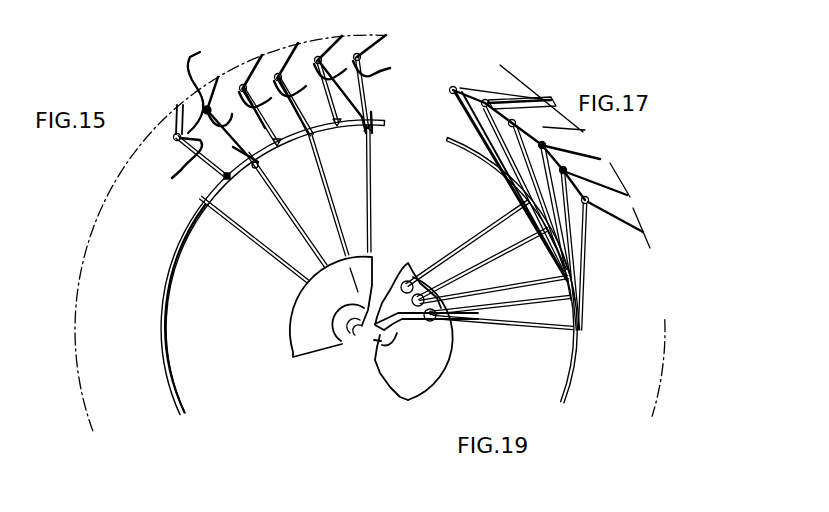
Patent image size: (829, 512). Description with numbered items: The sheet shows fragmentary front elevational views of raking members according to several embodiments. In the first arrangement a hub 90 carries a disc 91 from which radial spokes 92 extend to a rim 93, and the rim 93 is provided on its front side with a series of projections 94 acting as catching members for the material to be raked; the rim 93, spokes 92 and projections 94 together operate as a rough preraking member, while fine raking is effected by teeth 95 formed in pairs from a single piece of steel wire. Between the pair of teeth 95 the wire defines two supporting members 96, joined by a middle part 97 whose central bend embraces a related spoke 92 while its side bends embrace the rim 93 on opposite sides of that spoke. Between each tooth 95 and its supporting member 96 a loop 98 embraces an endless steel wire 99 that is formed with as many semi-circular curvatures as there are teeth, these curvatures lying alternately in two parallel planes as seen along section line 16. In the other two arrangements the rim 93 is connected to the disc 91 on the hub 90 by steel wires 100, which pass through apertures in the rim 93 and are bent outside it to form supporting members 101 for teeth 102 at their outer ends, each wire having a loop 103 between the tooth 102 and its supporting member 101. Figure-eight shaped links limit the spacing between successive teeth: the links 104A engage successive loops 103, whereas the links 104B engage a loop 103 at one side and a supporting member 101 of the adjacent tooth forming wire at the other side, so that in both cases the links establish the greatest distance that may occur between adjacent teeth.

In FIG. 15, the section line 16- 16 is at (285, 102).
In FIG. 19, the section line 16- 16 is at (385, 385).
In FIG. 19, the hub 90 is at (389, 349).
In FIG. 19, the disc 91 is at (420, 381).
In FIG. 15, the radial spokes 92 is at (259, 243).
In FIG. 15, the rim 93 is at (178, 256).
In FIG. 15, the projections 94 is at (229, 178).
In FIG. 15, the teeth 95 is at (227, 75).
In FIG. 15, the supporting members 96 is at (232, 150).
In FIG. 15, the middle part 97 is at (256, 166).
In FIG. 15, the loop 98 is at (177, 132).
In FIG. 15, the endless steel wire 99 is at (180, 172).
In FIG. 19, the steel wires 100 is at (497, 240).
In FIG. 17, the supporting members 101 is at (478, 122).
In FIG. 17, the teeth 102 is at (543, 97).
In FIG. 17, the loop 103 is at (451, 87).
In FIG. 17, the links 104A is at (486, 100).
In FIG. 17, the links 104B is at (630, 197).